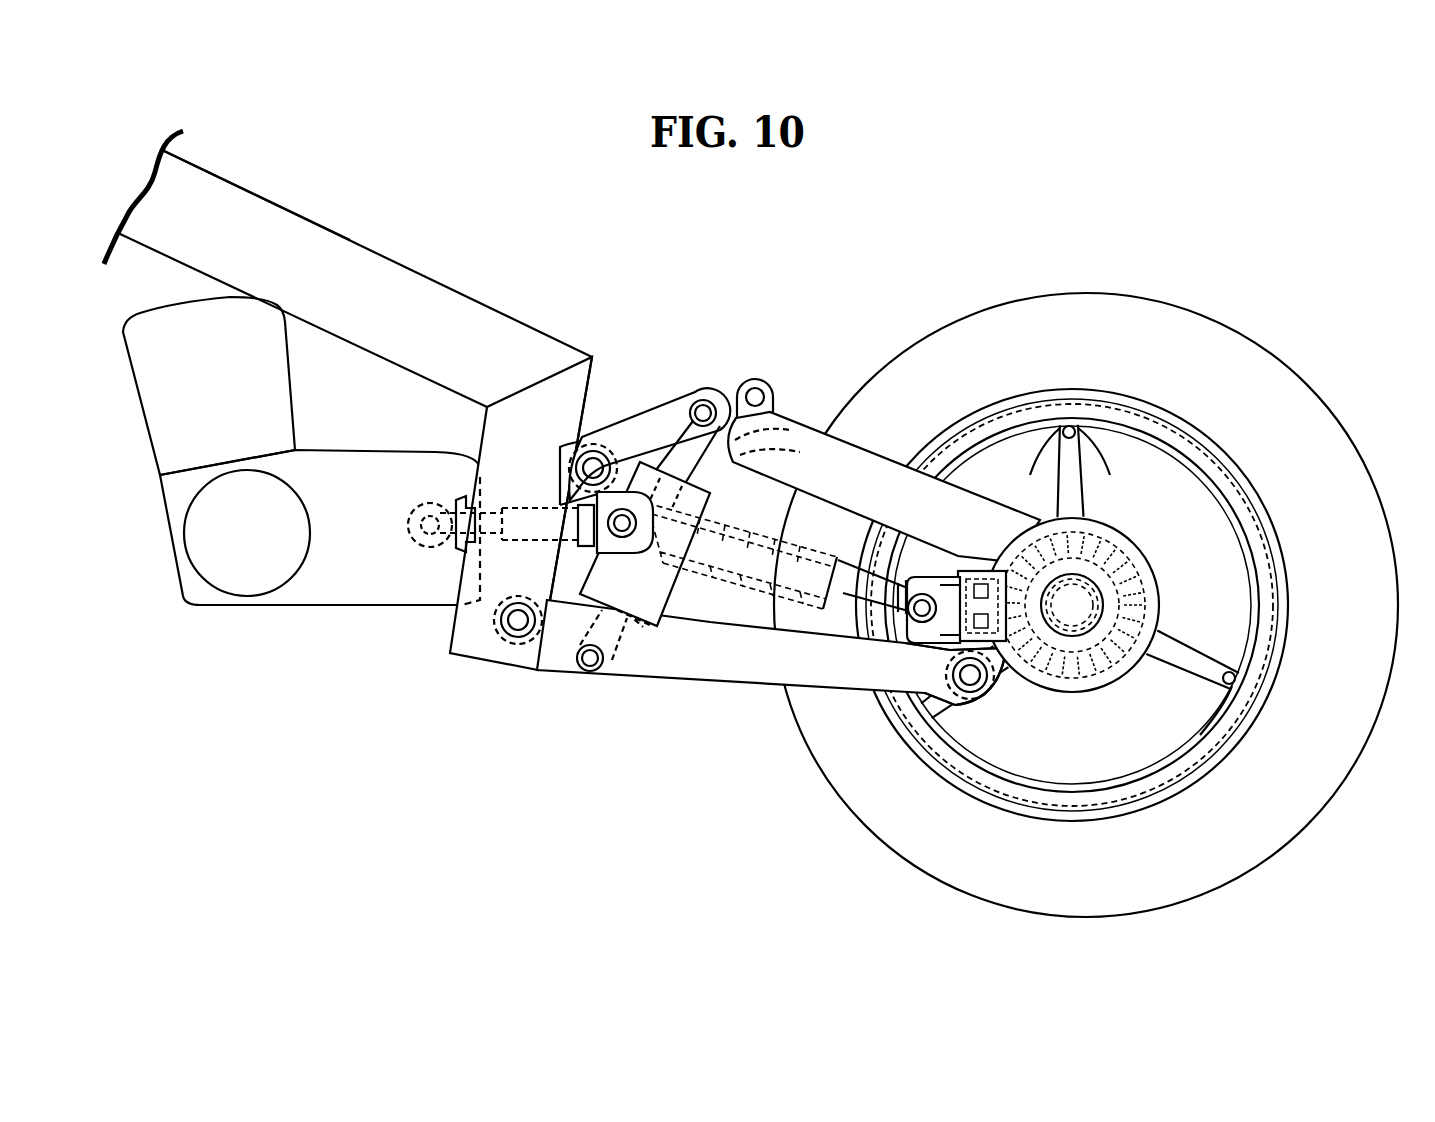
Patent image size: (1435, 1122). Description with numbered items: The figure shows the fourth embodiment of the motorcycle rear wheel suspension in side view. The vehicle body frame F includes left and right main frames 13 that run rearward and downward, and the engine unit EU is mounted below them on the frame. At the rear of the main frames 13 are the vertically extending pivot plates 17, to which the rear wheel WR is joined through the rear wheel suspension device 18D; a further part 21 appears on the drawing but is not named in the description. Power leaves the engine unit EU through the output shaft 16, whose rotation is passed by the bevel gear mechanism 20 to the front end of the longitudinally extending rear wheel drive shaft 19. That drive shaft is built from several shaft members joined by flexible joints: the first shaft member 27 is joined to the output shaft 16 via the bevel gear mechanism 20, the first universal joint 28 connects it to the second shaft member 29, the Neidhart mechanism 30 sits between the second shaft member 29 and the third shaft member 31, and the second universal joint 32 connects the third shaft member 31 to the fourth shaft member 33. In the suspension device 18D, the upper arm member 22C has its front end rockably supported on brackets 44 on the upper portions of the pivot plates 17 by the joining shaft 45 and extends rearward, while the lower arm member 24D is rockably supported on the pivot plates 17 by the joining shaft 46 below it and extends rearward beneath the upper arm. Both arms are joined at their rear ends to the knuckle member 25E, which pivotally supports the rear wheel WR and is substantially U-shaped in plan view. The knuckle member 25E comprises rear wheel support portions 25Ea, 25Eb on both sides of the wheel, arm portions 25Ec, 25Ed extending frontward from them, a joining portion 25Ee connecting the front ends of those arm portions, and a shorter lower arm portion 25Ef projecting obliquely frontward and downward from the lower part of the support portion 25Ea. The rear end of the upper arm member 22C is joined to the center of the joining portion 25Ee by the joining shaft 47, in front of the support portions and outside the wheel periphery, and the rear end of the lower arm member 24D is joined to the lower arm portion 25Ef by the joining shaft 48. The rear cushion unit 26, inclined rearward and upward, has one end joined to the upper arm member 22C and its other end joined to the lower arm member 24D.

The vehicle body frame F is at (303, 205).
The main frames 13 is at (390, 257).
The engine unit EU is at (320, 610).
The output shaft 16 is at (418, 513).
The pivot plates 17 is at (480, 653).
The rear wheel suspension device 18D is at (706, 394).
The rear wheel drive shaft 19 is at (736, 602).
The bevel gear mechanism 20 is at (428, 552).
The pivot bracket 21 is at (548, 437).
The upper arm member 22C is at (666, 428).
The lower arm member 24D is at (633, 678).
The knuckle member 25E is at (815, 702).
The rear wheel support portion 25Ea is at (1122, 537).
The rear wheel support portion 25Eb is at (1131, 581).
The arm portion 25Ec is at (868, 443).
The arm portion 25Ed is at (1072, 605).
The joining portion 25Ee is at (783, 430).
The lower arm portion 25Ef is at (1035, 692).
The rear cushion unit 26 is at (698, 498).
The first shaft member 27 is at (523, 510).
The first universal joint 28 is at (592, 550).
The second shaft member 29 is at (780, 534).
The Neidhart mechanism 30 is at (884, 487).
The third shaft member 31 is at (845, 595).
The second universal joint 32 is at (931, 650).
The fourth shaft member 33 is at (973, 570).
The brackets 44 is at (589, 440).
The joining shaft 45 is at (612, 445).
The joining shaft 46 is at (518, 640).
The joining shaft 47 is at (757, 388).
The joining shaft 48 is at (978, 697).
The rear wheel WR is at (1098, 320).